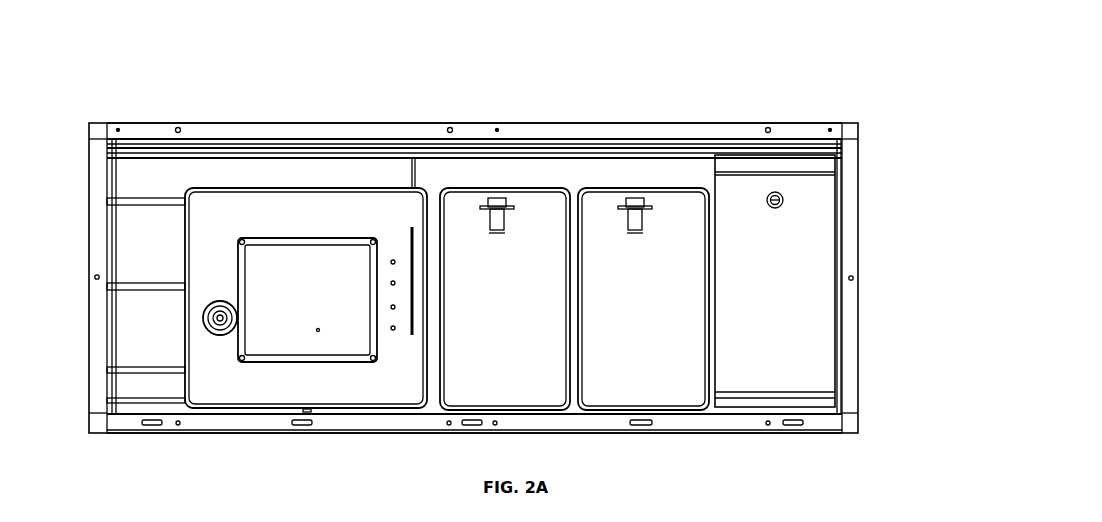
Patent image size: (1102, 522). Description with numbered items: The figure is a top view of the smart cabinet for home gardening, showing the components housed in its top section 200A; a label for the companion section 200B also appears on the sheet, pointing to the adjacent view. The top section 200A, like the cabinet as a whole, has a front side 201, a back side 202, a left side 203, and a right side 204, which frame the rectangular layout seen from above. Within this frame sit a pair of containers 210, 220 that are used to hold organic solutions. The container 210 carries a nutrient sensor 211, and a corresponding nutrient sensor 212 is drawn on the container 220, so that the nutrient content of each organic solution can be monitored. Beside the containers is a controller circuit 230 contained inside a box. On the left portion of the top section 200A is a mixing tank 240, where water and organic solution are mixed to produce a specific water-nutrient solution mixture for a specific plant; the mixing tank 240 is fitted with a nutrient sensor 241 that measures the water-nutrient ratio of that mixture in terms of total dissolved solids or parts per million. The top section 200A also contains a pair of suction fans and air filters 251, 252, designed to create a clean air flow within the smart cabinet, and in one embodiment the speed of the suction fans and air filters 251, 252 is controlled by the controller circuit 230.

The top section 200A is at (696, 88).
The rear panel assembly 200B is at (728, 521).
The front side 201 is at (399, 434).
The back side 202 is at (398, 123).
The left side 203 is at (89, 270).
The right side 204 is at (858, 264).
The container 210 is at (505, 299).
The nutrient sensor 211 is at (488, 226).
The second connector 212 is at (626, 226).
The container 220 is at (643, 299).
The controller circuit 230 is at (775, 281).
The mixing tank 240 is at (307, 300).
The nutrient sensor 241 is at (220, 337).
The suction fan and air filter 251 is at (306, 286).
The suction fan and air filter 252 is at (571, 170).